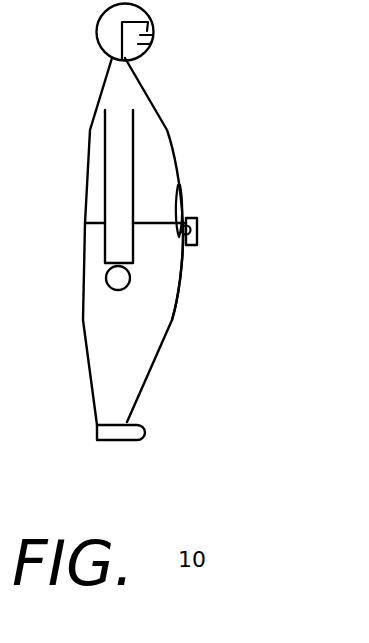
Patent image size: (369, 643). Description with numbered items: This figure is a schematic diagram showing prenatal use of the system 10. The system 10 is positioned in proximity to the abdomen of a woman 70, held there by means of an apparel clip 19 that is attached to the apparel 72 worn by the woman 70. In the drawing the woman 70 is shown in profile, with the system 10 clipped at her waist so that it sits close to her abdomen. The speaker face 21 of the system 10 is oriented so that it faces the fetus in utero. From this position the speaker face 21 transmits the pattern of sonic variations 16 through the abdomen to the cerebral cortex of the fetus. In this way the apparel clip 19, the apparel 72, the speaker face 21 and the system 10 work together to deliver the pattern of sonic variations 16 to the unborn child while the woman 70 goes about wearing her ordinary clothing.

The system 10 is at (202, 230).
The pattern of sonic variations 16 is at (180, 240).
The apparel clip 19 is at (185, 220).
The speaker face 21 is at (180, 180).
The woman 70 is at (164, 96).
The apparel 72 is at (170, 258).